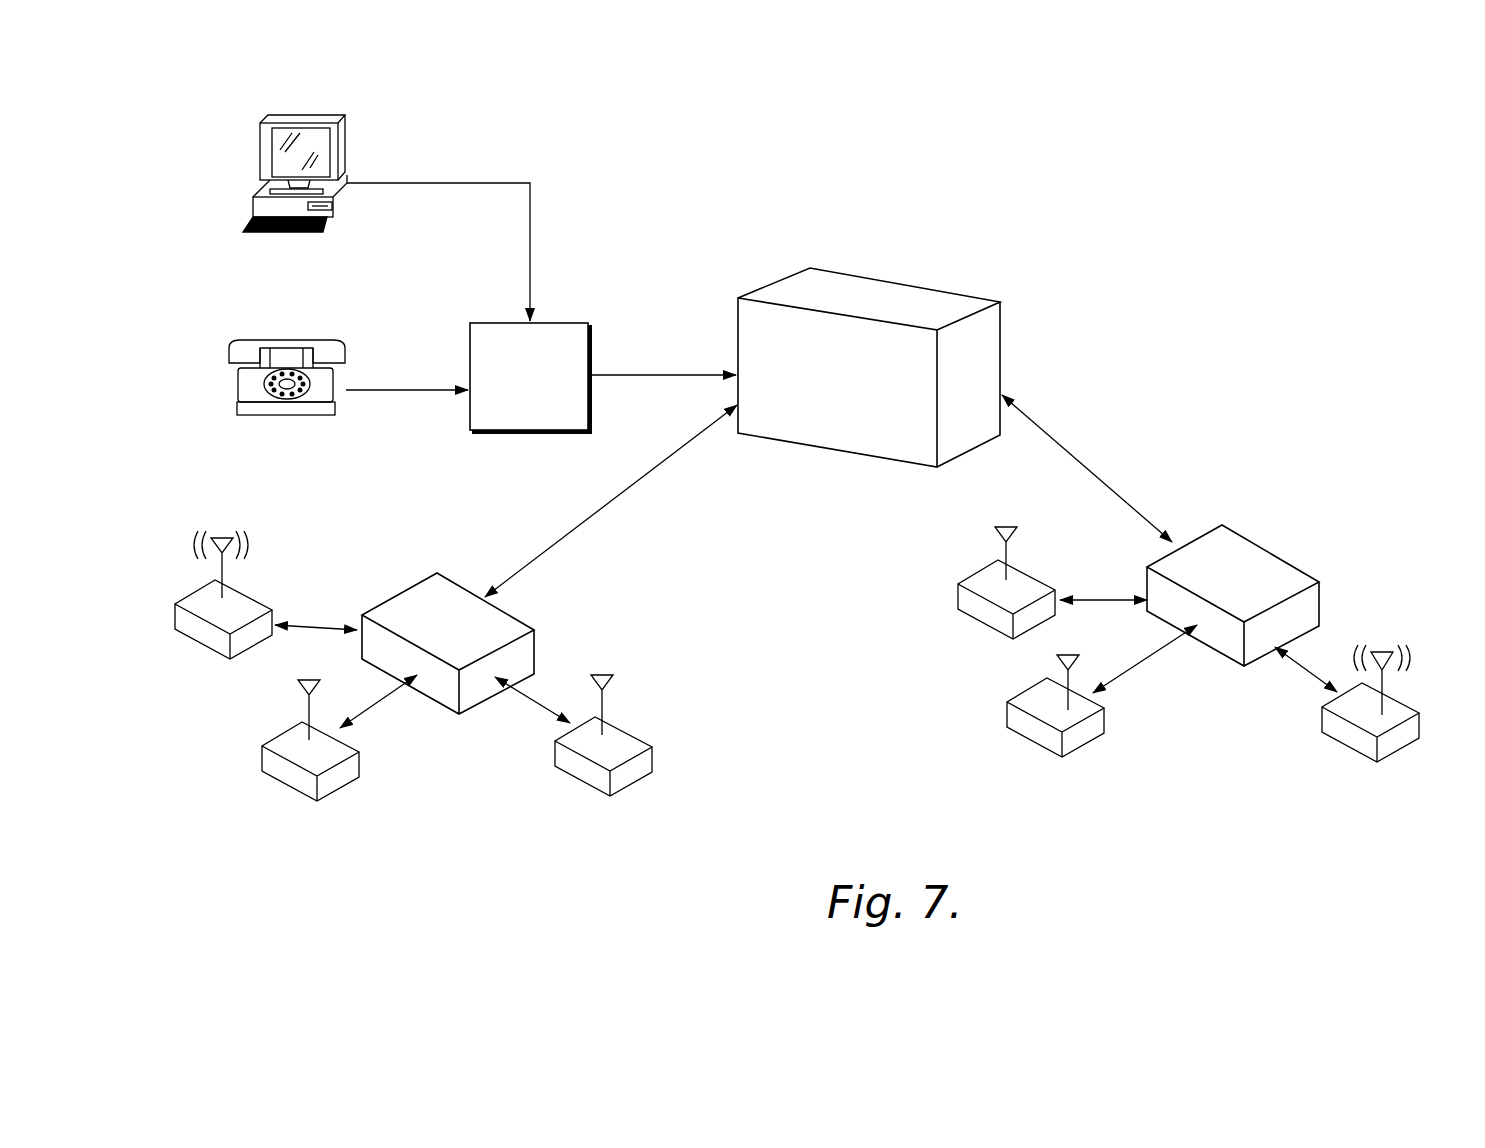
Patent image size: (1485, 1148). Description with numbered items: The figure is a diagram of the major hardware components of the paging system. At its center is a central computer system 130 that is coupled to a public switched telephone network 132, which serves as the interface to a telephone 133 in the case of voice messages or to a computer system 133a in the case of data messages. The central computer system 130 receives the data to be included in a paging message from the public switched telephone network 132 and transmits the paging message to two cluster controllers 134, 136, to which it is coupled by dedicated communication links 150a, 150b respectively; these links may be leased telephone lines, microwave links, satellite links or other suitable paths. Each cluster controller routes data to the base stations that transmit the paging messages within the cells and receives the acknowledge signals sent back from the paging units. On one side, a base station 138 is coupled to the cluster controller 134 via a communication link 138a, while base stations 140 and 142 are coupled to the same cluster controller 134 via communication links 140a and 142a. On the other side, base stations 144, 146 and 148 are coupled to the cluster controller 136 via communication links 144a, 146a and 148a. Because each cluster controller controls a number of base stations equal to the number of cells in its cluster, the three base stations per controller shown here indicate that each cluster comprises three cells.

The central computer system 130 is at (863, 273).
The public switched telephone network 132 is at (578, 323).
The telephone 133 is at (285, 337).
The computer system 133a is at (312, 113).
The cluster controller 134 is at (525, 620).
The cluster controller 136 is at (1270, 553).
The base station 138 is at (260, 607).
The communication link 138a is at (305, 630).
The base station 140 is at (287, 782).
The communication link 140a is at (373, 705).
The base station 142 is at (632, 787).
The communication link 142a is at (530, 702).
The base station 144 is at (980, 620).
The communication link 144a is at (1095, 600).
The base station 146 is at (1032, 742).
The communication link 146a is at (1143, 665).
The base station 148 is at (1397, 755).
The communication link 148a is at (1302, 673).
The dedicated communication link 150a is at (560, 537).
The dedicated communication link 150b is at (1053, 450).